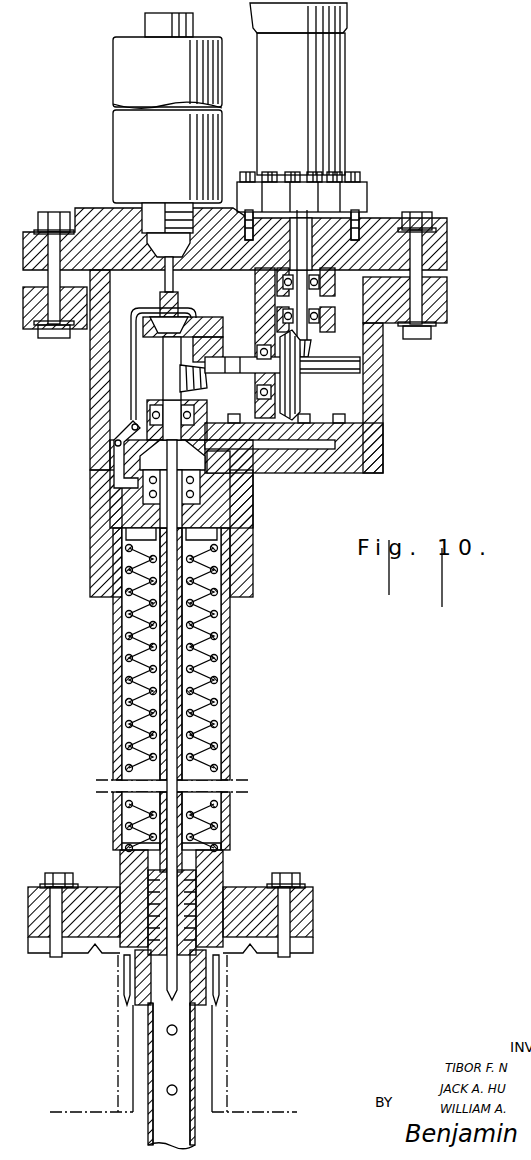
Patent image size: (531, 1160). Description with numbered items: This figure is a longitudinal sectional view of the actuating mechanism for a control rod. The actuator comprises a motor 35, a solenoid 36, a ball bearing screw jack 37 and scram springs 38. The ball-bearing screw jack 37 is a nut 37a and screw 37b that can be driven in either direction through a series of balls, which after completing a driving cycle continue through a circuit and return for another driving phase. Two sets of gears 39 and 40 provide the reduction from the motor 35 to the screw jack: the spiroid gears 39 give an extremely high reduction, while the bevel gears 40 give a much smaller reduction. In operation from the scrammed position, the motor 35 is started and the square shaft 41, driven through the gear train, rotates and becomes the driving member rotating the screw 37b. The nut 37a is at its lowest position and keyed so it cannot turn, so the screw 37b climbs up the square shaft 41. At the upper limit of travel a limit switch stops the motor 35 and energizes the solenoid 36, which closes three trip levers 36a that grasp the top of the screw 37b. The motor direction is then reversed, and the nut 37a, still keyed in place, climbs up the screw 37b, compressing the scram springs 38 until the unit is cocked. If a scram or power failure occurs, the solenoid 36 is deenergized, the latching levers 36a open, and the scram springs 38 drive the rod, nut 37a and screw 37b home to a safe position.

The motor 35 is at (333, 132).
The solenoid 36 is at (122, 155).
The trip levers 36a is at (110, 492).
The ball bearing screw jack 37 is at (207, 958).
The nut 37a is at (197, 890).
The screw 37b is at (220, 857).
The scram springs 38 is at (195, 742).
The spiroid gears 39 is at (312, 345).
The bevel gears 40 is at (183, 377).
The square shaft 41 is at (194, 626).